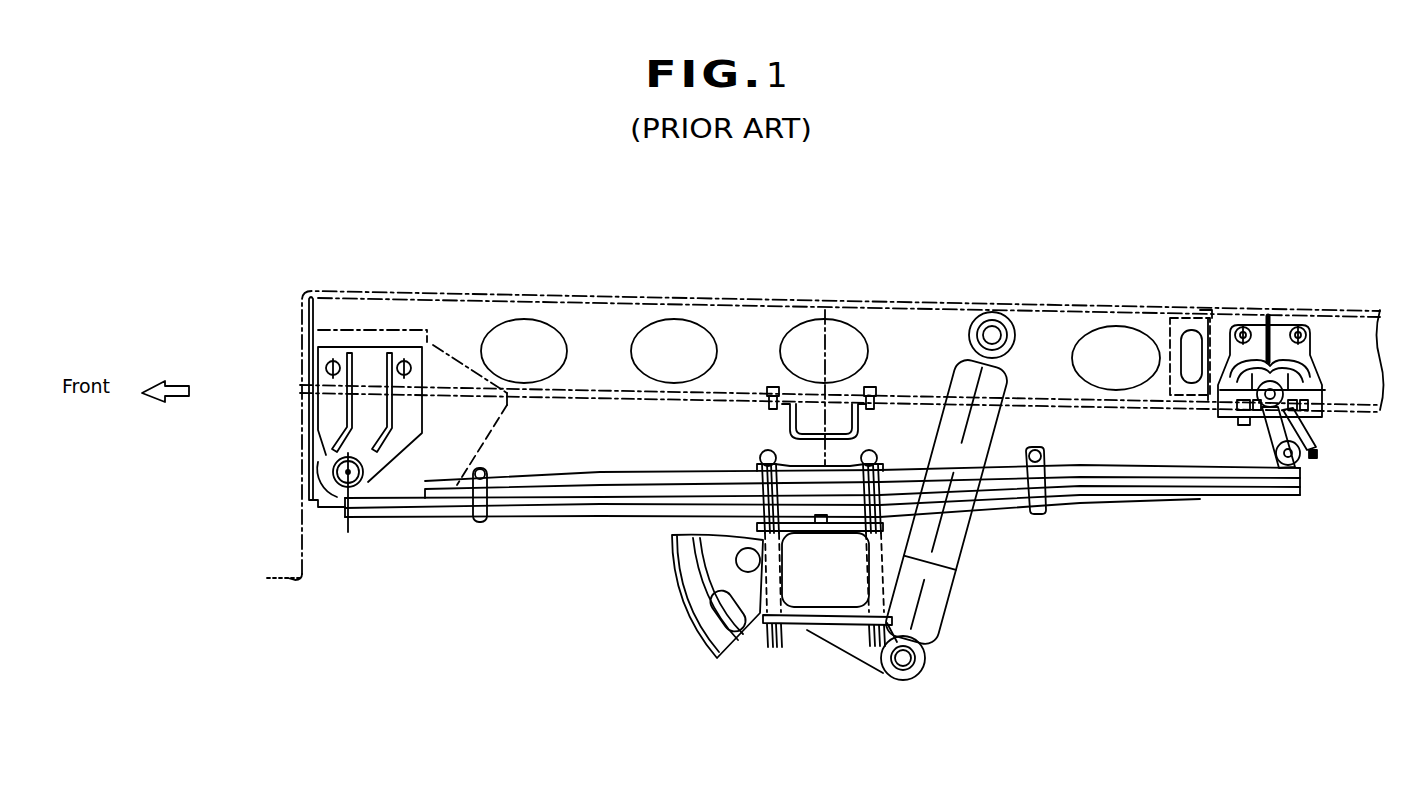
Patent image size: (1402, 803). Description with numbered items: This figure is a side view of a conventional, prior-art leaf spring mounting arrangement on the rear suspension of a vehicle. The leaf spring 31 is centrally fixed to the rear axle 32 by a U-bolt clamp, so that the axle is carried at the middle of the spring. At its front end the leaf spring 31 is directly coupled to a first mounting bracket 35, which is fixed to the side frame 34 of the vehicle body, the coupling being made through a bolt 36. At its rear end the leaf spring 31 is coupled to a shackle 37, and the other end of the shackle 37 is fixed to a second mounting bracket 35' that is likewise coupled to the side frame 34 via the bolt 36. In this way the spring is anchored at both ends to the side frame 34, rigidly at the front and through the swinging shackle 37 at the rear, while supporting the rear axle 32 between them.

The leaf spring 31 is at (570, 512).
The rear axle 32 is at (828, 605).
The side frame 34 is at (603, 325).
The first mounting bracket 35 is at (321, 414).
The second mounting bracket 35' is at (1271, 324).
The bolt 36 is at (345, 492).
The shackle 37 is at (1300, 427).